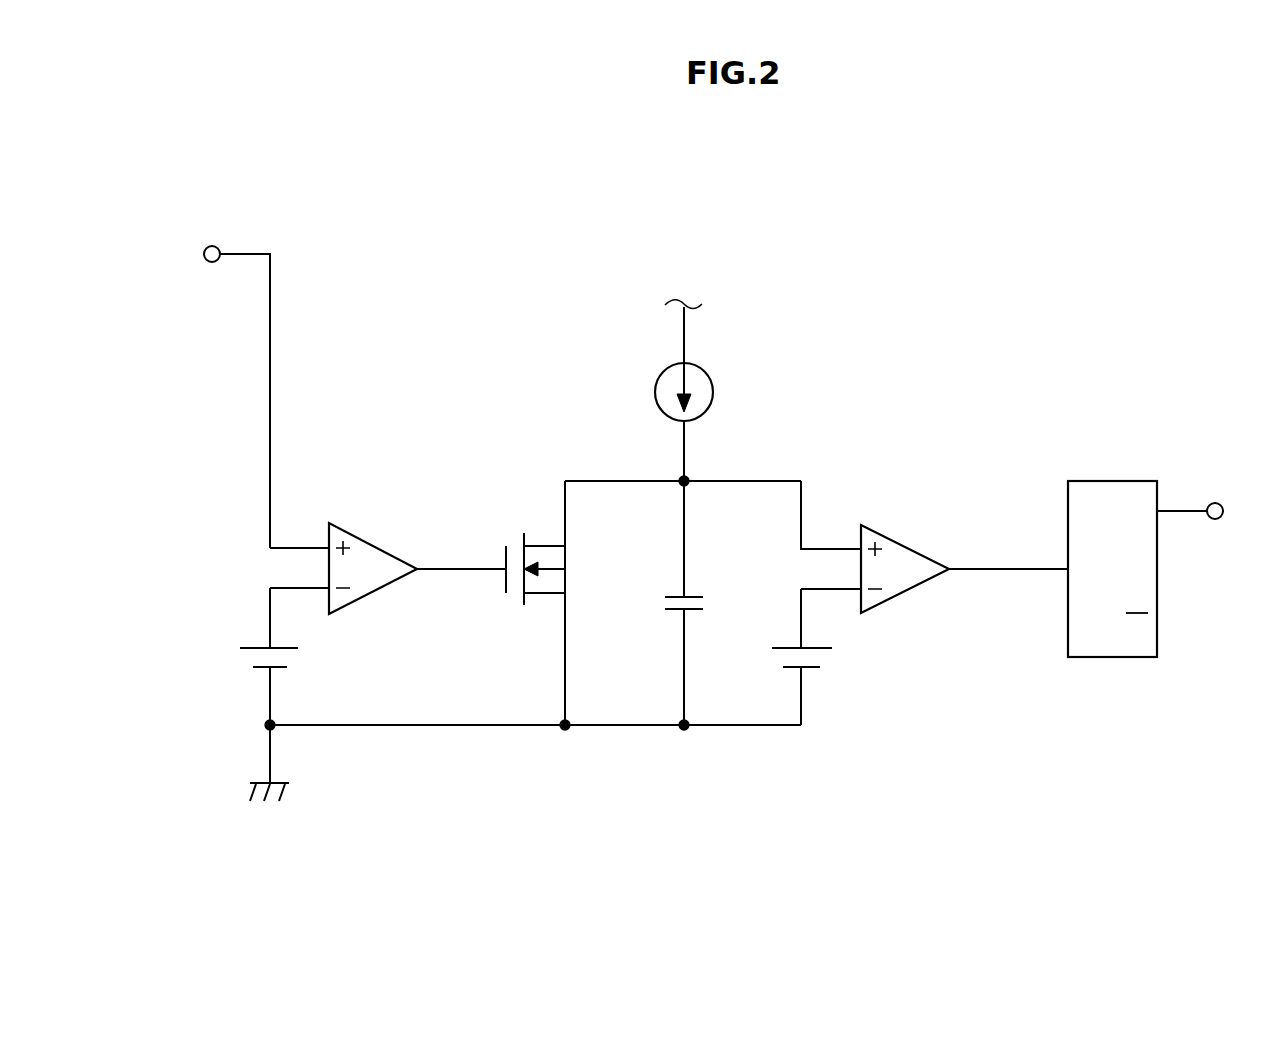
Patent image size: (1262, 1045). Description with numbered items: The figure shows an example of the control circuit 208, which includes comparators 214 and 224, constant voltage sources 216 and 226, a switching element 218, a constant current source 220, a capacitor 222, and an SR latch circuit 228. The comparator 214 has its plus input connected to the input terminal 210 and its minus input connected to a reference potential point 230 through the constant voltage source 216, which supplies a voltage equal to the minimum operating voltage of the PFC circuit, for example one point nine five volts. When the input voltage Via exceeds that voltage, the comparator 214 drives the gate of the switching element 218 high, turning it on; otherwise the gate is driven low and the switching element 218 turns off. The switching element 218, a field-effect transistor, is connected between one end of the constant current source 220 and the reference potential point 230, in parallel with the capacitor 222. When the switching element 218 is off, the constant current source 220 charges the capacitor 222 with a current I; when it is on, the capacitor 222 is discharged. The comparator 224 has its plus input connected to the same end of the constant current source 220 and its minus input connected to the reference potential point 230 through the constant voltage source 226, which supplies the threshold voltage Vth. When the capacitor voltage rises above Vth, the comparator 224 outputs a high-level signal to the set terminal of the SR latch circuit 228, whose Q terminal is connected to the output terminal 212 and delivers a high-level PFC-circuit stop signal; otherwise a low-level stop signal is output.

The control circuit 208 is at (877, 275).
The input terminal 210 is at (211, 246).
The output terminal 212 is at (1216, 502).
The comparator 214 is at (360, 536).
The constant voltage source 216 is at (298, 660).
The switching element 218 is at (514, 535).
The constant current source 220 is at (710, 368).
The capacitor 222 is at (706, 603).
The comparator 224 is at (892, 536).
The constant voltage source 226 is at (830, 660).
The SR latch circuit 228 is at (1128, 480).
The reference potential point 230 is at (482, 723).